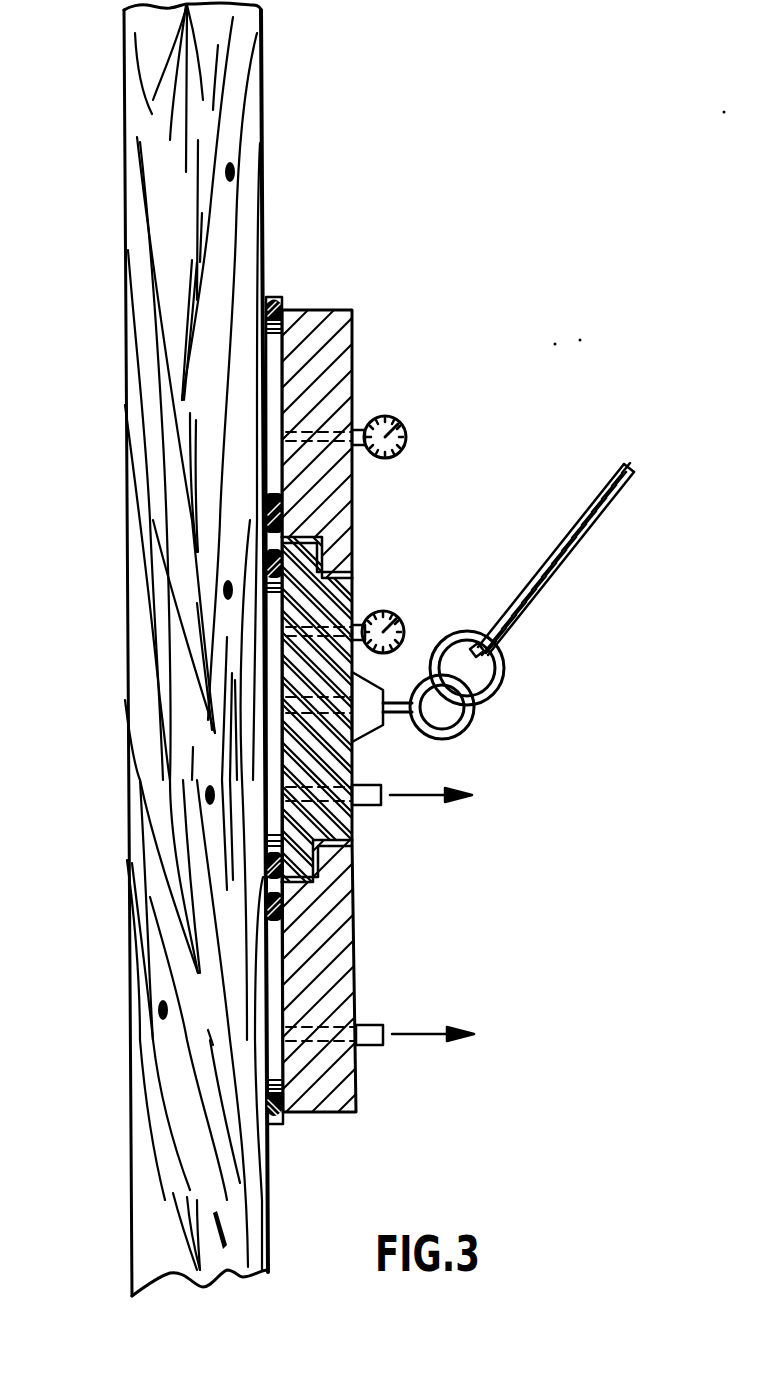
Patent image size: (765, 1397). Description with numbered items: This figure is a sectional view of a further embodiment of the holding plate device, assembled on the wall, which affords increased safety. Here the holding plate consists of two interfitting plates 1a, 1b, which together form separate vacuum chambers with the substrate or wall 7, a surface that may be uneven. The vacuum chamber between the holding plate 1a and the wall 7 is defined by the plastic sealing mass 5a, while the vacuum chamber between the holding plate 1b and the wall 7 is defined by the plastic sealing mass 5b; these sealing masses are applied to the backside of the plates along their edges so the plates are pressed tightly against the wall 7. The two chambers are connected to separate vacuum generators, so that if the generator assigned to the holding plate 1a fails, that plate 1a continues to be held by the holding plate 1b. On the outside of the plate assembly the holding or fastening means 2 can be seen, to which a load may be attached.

The substrate 7 is at (148, 110).
The holding plate 1a is at (353, 608).
The holding plate 1b is at (353, 312).
The holding or fastening means 2 is at (448, 722).
The plastic sealing mass 5a is at (268, 560).
The plastic sealing mass 5b is at (276, 298).